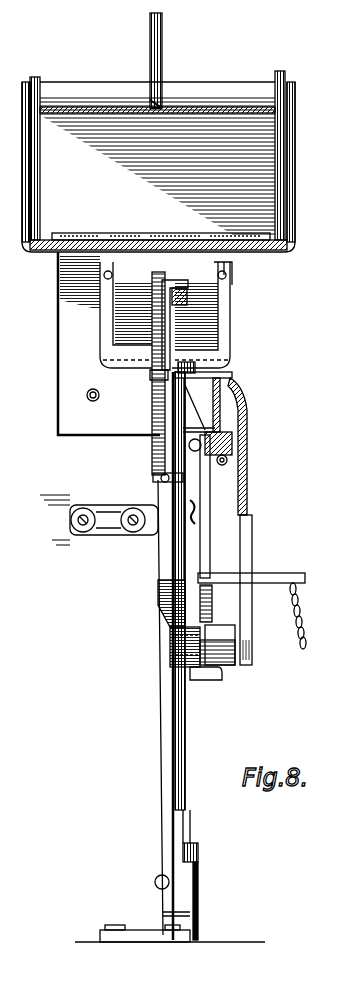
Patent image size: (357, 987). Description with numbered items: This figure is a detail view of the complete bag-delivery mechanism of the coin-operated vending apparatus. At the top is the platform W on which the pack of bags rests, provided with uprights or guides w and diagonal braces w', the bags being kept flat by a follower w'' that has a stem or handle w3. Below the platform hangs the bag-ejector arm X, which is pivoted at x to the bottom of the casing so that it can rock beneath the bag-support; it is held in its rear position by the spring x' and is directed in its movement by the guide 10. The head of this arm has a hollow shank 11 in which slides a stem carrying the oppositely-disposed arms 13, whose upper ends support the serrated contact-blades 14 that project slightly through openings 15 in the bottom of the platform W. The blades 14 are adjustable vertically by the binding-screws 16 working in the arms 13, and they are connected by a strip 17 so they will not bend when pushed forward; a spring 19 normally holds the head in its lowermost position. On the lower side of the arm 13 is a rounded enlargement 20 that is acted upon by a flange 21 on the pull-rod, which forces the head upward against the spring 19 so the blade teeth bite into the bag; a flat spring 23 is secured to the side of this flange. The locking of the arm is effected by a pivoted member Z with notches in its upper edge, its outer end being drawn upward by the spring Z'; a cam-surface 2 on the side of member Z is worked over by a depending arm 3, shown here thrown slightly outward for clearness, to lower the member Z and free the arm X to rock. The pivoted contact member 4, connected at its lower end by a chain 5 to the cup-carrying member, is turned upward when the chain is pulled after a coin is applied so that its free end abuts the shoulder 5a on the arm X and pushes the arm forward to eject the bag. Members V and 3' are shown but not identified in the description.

The diagonal braces w' is at (175, 167).
The uprights or guides w is at (173, 155).
The platform W is at (272, 250).
The follower w'' is at (157, 82).
The stem or handle w3 is at (150, 37).
The serrated contact-blades 14 is at (58, 275).
The openings 15 is at (80, 283).
The arms 13 is at (113, 327).
The binding-screws 16 is at (230, 282).
The strip 17 is at (150, 278).
The hollow shank 11 is at (160, 405).
The spring 19 is at (152, 378).
The enlargement 20 is at (235, 367).
The flat spring 23 is at (222, 388).
The shoulder 5a is at (197, 405).
The flange 21 is at (245, 425).
The valve V is at (232, 455).
The bag-ejector arm X is at (163, 720).
The pivot x is at (149, 883).
The spring x' is at (155, 488).
The pivoted contact member 4 is at (212, 500).
The guide 10 is at (185, 515).
The depending arm 3 is at (214, 594).
The spring Z' is at (215, 603).
The chain 5 is at (308, 616).
The block 3' is at (161, 644).
The cam-surface 2 is at (222, 660).
The pivoted member Z is at (206, 685).